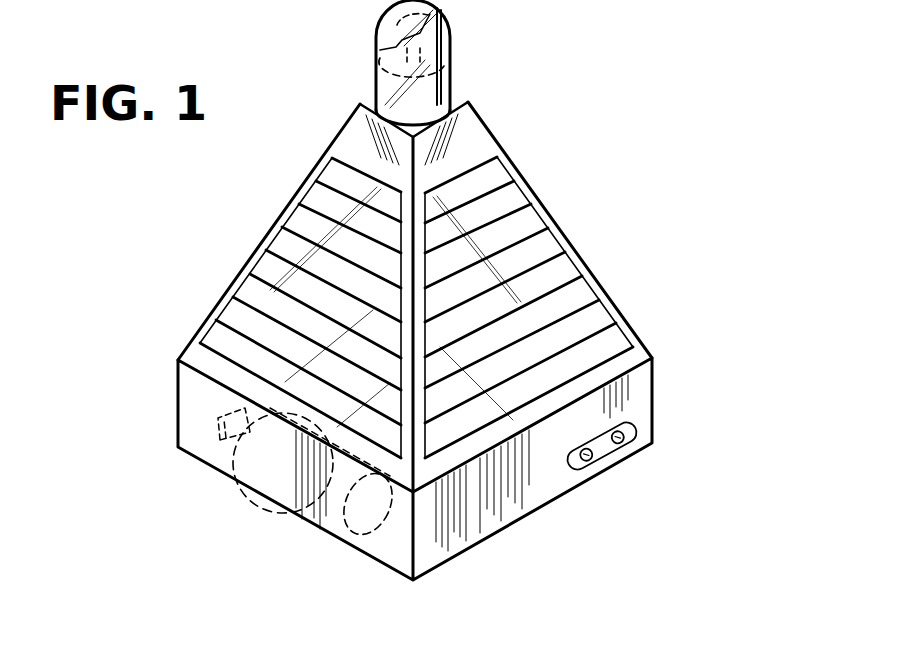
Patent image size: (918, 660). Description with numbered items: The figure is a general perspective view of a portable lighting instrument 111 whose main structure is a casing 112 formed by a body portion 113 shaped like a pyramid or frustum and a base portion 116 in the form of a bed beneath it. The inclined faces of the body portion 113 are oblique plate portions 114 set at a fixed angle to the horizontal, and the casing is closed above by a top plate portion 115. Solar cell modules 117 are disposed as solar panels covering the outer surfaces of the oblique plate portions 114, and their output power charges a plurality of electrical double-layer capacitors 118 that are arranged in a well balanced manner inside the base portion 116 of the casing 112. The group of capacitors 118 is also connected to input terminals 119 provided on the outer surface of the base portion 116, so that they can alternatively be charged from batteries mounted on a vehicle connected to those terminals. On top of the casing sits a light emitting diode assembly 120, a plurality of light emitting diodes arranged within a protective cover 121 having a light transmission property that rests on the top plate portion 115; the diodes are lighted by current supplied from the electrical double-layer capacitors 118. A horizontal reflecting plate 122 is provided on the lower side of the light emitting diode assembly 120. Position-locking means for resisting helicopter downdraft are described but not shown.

The portable lighting instrument 111 is at (637, 194).
The casing 112 is at (738, 283).
The body portion 113 is at (626, 322).
The oblique plate portions 114 is at (353, 148).
The top plate portion 115 is at (460, 100).
The base portion 116 is at (653, 400).
The solar cell modules 117 is at (232, 282).
The electrical double-layer capacitors 118 is at (290, 492).
The input terminals 119 is at (590, 458).
The light emitting diode assembly 120 is at (447, 23).
The protective cover 121 is at (376, 52).
The horizontal reflecting plate 122 is at (450, 80).